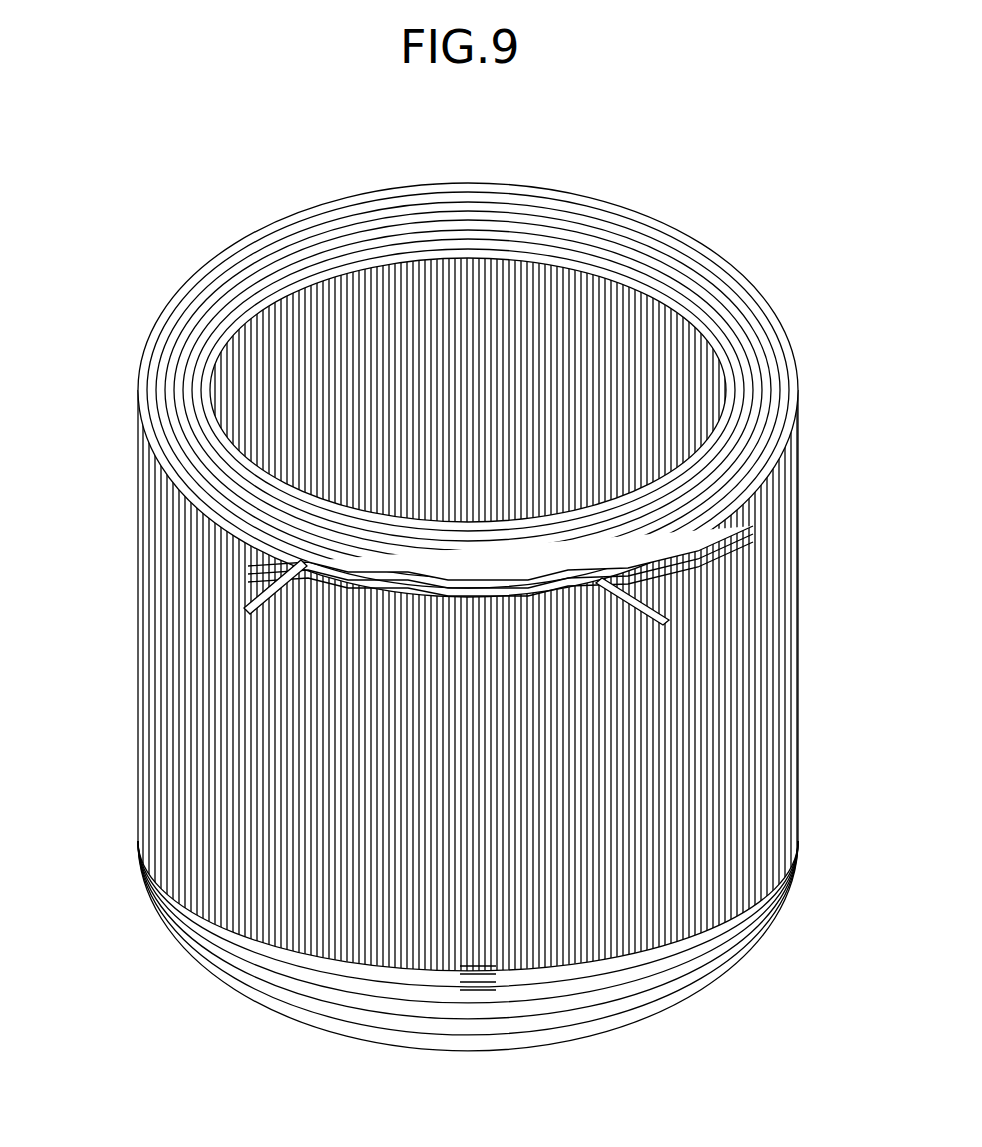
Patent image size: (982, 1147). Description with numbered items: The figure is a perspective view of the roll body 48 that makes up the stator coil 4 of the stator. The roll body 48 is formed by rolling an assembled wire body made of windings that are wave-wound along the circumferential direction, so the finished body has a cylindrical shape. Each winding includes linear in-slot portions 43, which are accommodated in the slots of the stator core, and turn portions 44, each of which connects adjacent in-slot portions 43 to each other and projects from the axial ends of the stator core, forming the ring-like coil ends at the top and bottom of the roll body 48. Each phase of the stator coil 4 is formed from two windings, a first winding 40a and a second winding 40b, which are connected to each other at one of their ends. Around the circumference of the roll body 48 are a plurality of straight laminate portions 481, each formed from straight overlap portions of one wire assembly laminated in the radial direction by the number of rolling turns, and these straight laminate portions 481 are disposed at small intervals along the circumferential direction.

The stator coil 4 is at (467, 593).
The roll body 48 is at (713, 191).
The turn portions 44 is at (130, 368).
The in-slot portions 43 is at (150, 672).
The first winding 40a is at (651, 621).
The second winding 40b is at (683, 560).
The straight laminate portions 481 is at (460, 903).